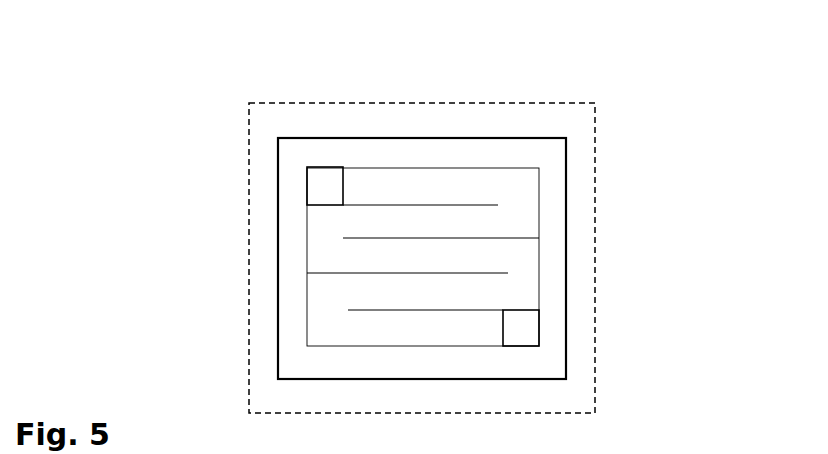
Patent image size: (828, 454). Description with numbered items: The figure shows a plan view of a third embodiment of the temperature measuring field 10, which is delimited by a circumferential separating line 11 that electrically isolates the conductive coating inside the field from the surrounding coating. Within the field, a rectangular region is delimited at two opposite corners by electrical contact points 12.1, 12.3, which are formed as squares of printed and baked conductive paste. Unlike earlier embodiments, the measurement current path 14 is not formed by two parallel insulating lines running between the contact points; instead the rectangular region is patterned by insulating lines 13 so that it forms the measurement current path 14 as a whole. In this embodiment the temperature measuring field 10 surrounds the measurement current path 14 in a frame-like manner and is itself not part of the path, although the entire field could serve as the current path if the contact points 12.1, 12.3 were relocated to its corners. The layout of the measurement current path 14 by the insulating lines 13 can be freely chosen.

The temperature measuring field 10 is at (422, 137).
The circumferential separating line 11 is at (566, 207).
The first contact point 12.1 is at (307, 205).
The third contact element 12.3 is at (539, 310).
The insulating lines 13 is at (307, 253).
The measurement current path 14 is at (453, 187).